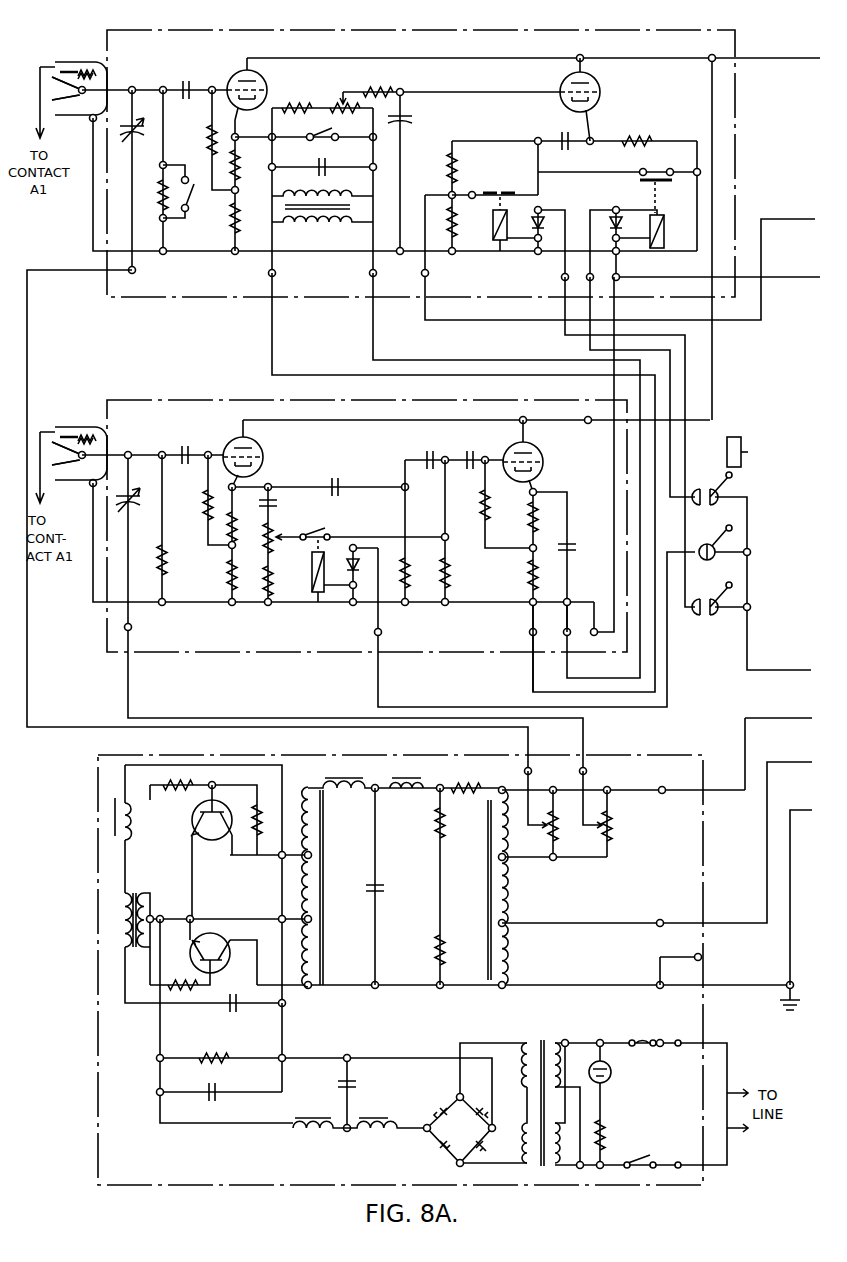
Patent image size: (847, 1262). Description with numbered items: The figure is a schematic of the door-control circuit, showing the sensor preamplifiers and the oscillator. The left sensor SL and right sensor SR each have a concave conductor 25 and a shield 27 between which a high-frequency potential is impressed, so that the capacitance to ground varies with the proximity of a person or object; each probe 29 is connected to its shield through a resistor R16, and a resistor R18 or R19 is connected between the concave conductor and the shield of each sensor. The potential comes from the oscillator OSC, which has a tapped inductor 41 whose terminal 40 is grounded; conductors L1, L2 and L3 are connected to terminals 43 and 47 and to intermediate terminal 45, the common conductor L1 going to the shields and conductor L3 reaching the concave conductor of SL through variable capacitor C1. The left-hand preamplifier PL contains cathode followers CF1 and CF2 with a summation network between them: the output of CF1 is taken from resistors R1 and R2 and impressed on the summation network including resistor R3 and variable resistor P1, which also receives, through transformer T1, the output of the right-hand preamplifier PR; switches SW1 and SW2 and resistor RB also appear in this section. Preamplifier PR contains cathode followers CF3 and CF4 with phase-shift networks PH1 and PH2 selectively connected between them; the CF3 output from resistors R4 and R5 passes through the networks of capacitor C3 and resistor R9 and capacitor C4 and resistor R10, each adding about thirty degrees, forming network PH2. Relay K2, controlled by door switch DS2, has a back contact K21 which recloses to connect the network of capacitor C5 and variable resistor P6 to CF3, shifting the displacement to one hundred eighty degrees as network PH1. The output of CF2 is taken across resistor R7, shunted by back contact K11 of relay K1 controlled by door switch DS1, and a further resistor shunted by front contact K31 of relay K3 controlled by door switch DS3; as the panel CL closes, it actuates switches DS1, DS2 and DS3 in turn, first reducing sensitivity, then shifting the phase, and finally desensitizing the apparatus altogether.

The concave conductor 25 is at (78, 90).
The shield 27 is at (74, 113).
The probe 29 is at (74, 62).
The terminal 40 is at (506, 982).
The tapped inductor 41 is at (508, 897).
The terminal 43 is at (506, 930).
The intermediate terminal 45 is at (506, 861).
The terminal 47 is at (502, 788).
The left-hand preamplifier PL is at (195, 30).
The right-hand preamplifier PR is at (187, 400).
The oscillator OSC is at (628, 758).
The left sensor SL is at (78, 141).
The right sensor SR is at (78, 508).
The resistor R16 is at (84, 64).
The variable capacitor C1 is at (126, 182).
The resistor R18 is at (163, 190).
The switch SW2 is at (198, 200).
The cathode follower CF1 is at (255, 78).
The resistor R1 is at (236, 170).
The resistor R2 is at (247, 216).
The switch SW1 is at (326, 142).
The resistor R3 is at (322, 99).
The variable resistor P1 is at (338, 97).
The transformer T1 is at (380, 209).
The resistor R7 is at (446, 164).
The resistor RB is at (448, 228).
The back contact K11 is at (495, 193).
The relay K1 is at (492, 240).
The cathode follower CF2 is at (598, 72).
The front contact K31 is at (638, 178).
The relay K3 is at (668, 236).
The conductor L1 is at (206, 250).
The conductor L2 is at (199, 718).
The conductor L3 is at (62, 271).
The door switch DS1 is at (709, 485).
The door switch DS2 is at (709, 541).
The door switch DS3 is at (709, 595).
The panel CL is at (748, 452).
The resistor R19 is at (158, 562).
The cathode follower CF3 is at (256, 448).
The phase-shift network PH1 is at (322, 476).
The capacitor C3 is at (340, 480).
The resistor R4 is at (243, 546).
The resistor R5 is at (226, 571).
The capacitor C5 is at (282, 499).
The variable resistor P6 is at (284, 531).
The back contact K21 is at (314, 533).
The phase shift network PH2 is at (398, 530).
The relay K2 is at (312, 574).
The resistor R9 is at (416, 533).
The capacitor C4 is at (426, 452).
The resistor R10 is at (452, 573).
The cathode follower CF4 is at (541, 451).